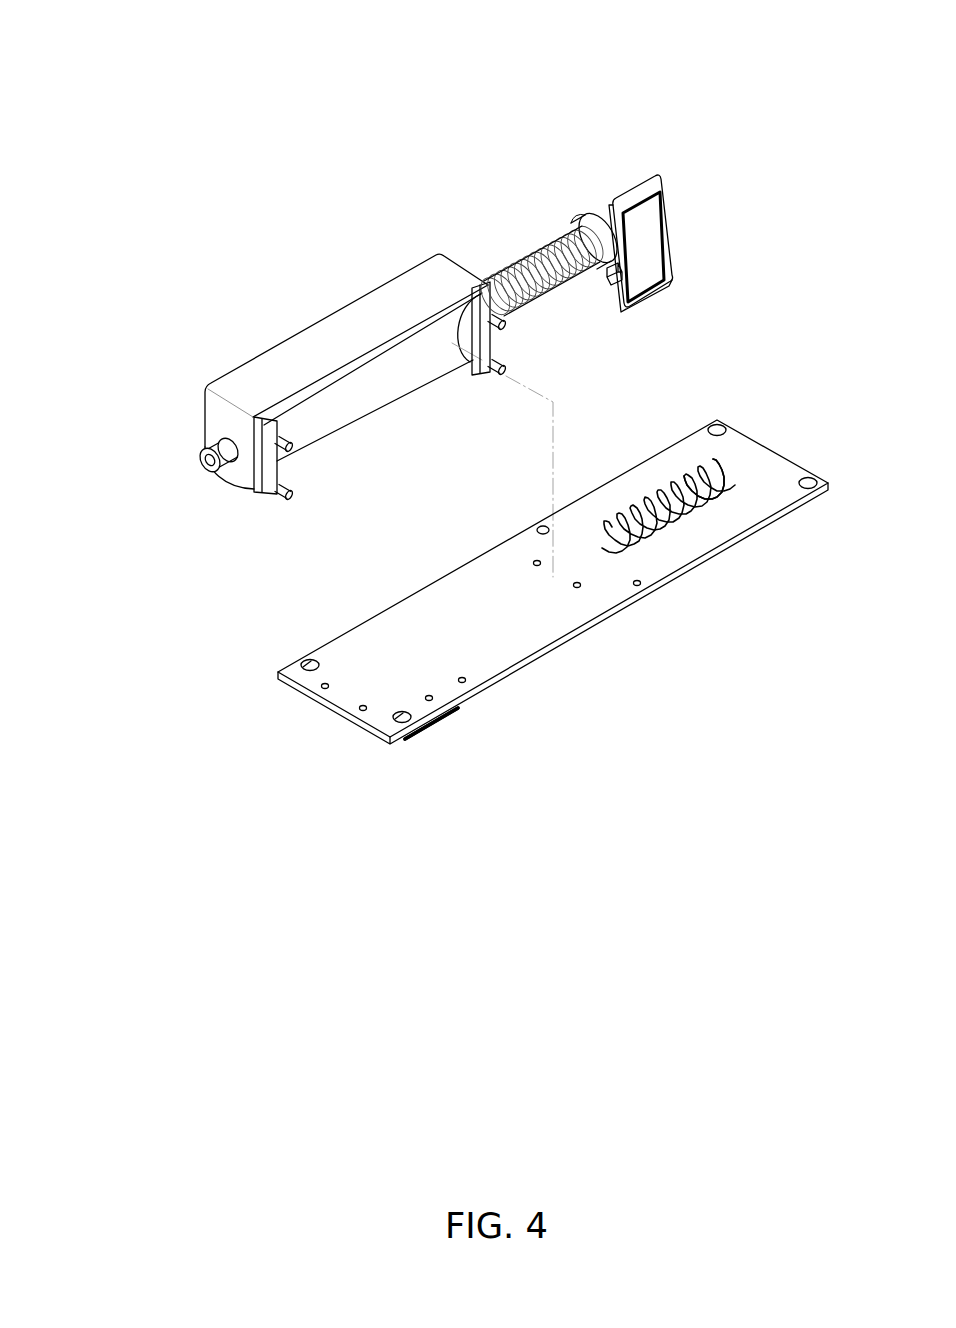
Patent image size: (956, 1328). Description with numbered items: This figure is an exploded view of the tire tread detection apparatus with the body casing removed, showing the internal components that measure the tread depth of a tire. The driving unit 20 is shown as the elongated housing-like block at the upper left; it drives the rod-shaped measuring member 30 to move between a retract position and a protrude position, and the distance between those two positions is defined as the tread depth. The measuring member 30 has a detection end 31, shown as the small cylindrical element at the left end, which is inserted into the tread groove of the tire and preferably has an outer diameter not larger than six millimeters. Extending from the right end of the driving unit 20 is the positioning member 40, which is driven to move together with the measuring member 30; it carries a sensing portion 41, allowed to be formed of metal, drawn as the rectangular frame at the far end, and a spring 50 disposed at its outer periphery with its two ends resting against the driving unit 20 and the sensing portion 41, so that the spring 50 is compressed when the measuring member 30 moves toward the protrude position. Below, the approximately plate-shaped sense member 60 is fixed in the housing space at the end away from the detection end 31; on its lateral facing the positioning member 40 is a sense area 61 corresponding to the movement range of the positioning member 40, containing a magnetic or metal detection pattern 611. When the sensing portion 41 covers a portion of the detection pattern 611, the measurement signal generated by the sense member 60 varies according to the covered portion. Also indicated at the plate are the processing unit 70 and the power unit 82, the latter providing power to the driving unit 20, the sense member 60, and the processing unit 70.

The driving unit 20 is at (380, 378).
The measuring member 30 is at (230, 484).
The detection end 31 is at (208, 452).
The positioning member 40 is at (607, 165).
The sensing portion 41 is at (643, 243).
The spring 50 is at (530, 255).
The sense member 60 is at (598, 651).
The sense area 61 is at (678, 540).
The detection pattern 611 is at (723, 500).
The processing unit 70 is at (448, 723).
The power unit 82 is at (506, 768).